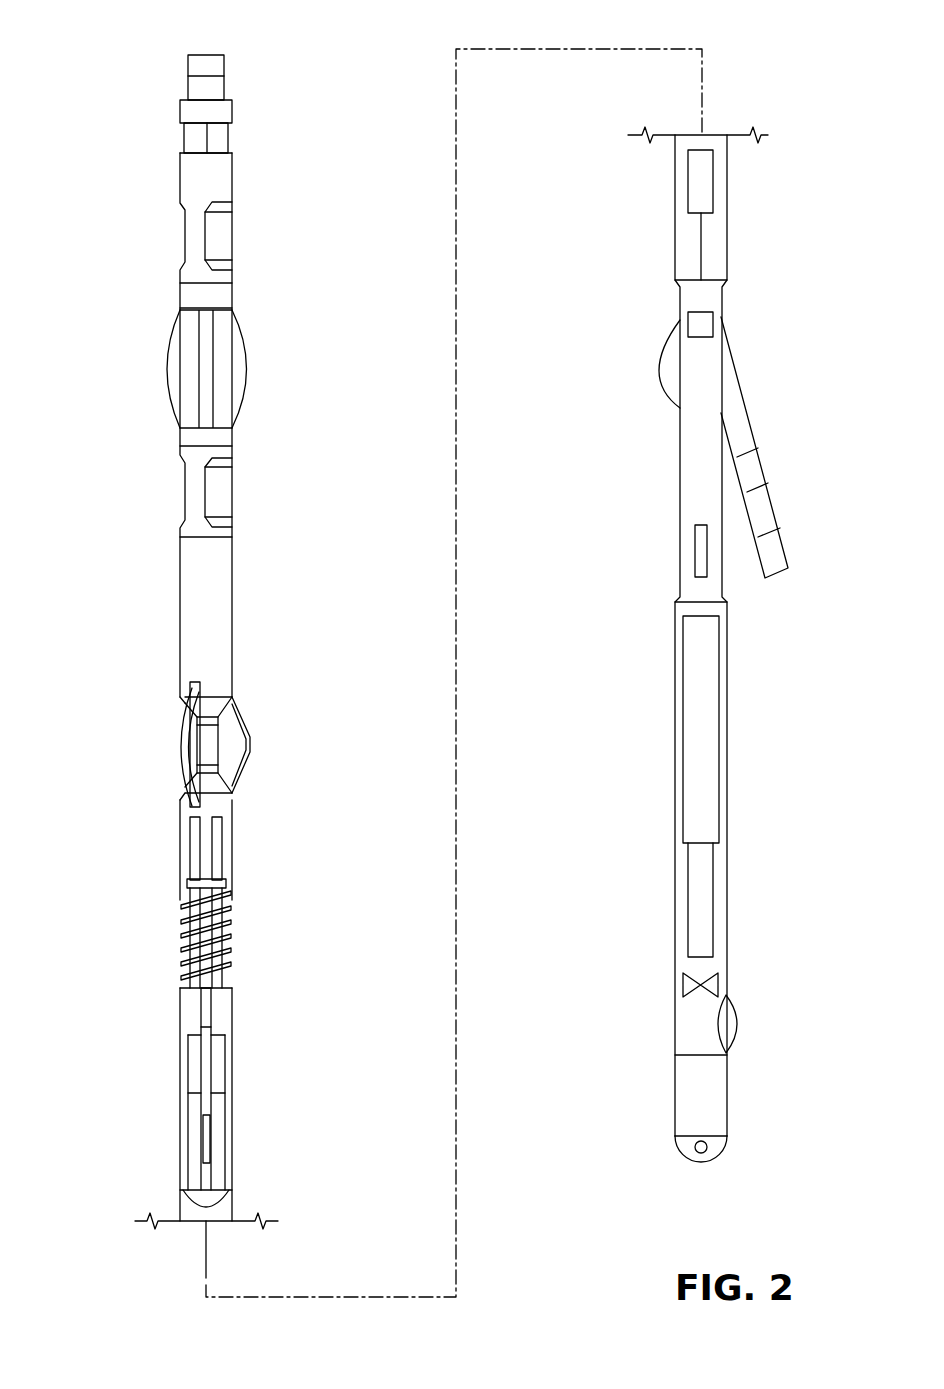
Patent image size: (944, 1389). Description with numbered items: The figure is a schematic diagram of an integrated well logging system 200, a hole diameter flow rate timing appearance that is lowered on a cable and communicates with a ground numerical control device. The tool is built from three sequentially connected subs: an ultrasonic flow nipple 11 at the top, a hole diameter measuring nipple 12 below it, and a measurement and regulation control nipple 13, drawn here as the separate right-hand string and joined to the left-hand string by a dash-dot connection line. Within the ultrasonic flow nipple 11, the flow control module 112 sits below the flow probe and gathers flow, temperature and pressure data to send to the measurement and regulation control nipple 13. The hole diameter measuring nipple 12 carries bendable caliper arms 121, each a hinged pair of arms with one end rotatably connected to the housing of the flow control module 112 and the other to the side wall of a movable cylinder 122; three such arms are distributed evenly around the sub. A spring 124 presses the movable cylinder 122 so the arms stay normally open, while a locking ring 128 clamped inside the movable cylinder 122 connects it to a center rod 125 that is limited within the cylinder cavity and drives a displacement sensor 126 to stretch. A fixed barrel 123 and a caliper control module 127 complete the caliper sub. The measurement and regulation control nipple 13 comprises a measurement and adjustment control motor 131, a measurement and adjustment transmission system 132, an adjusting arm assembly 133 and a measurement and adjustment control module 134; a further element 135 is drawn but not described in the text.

The integrated well logging system 200 is at (769, 44).
The ultrasonic flow nipple 11 is at (199, 366).
The hole diameter measuring nipple 12 is at (211, 934).
The measurement and regulation control nipple 13 is at (701, 646).
The flow control module 112 is at (260, 618).
The bendable caliper arm 121 is at (235, 708).
The movable cylinder 122 is at (213, 782).
The fixed barrel 123 is at (233, 1058).
The spring 124 is at (232, 933).
The center rod 125 is at (205, 1007).
The displacement sensor 126 is at (207, 1130).
The caliper control module 127 is at (254, 1178).
The locking ring 128 is at (225, 886).
The measurement and adjustment control motor 131 is at (701, 188).
The measurement and adjustment transmission system 132 is at (701, 257).
The adjusting arm assembly 133 is at (742, 413).
The measurement and adjustment control module 134 is at (703, 755).
The lower chamber 135 is at (768, 900).